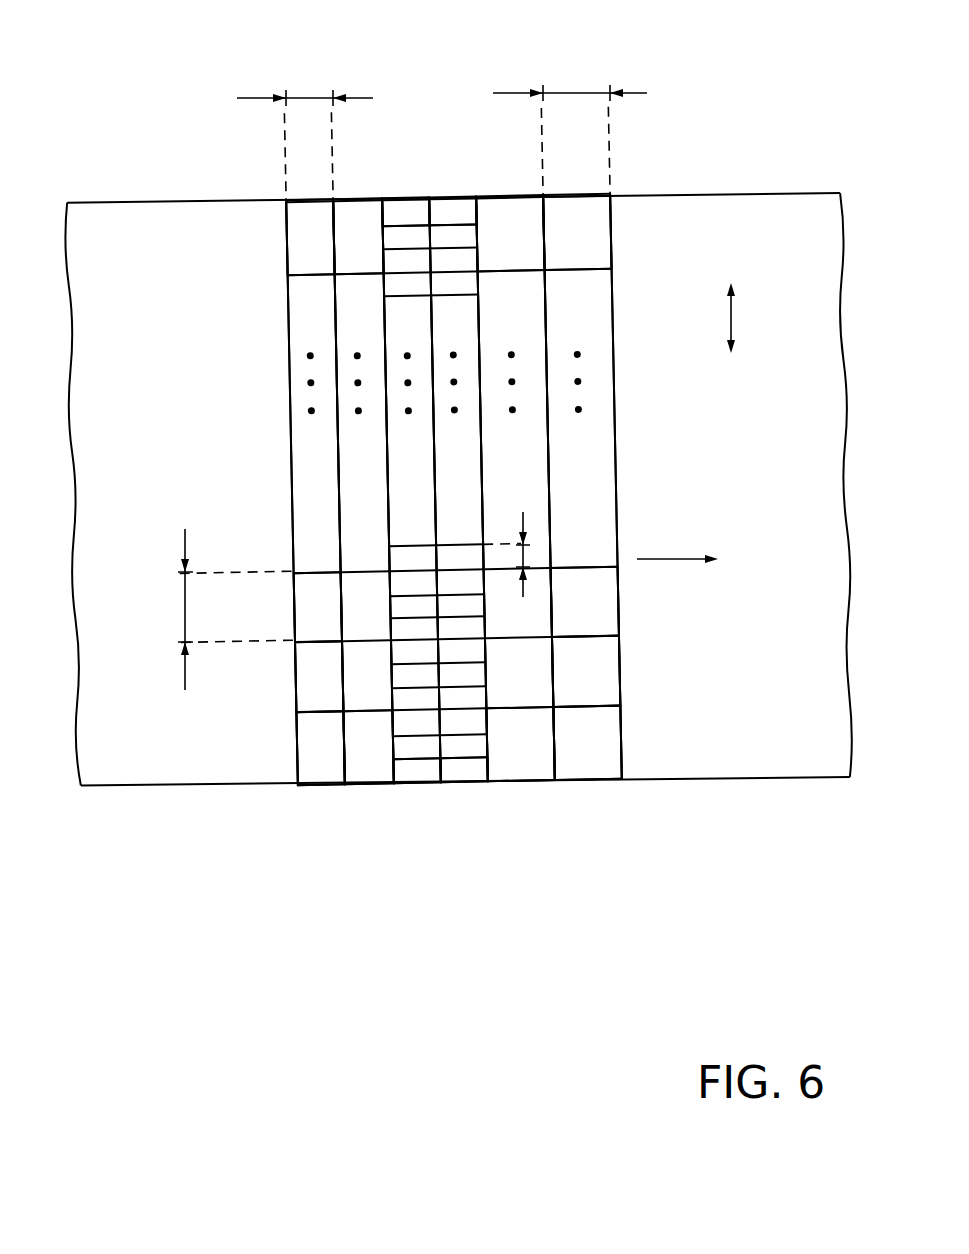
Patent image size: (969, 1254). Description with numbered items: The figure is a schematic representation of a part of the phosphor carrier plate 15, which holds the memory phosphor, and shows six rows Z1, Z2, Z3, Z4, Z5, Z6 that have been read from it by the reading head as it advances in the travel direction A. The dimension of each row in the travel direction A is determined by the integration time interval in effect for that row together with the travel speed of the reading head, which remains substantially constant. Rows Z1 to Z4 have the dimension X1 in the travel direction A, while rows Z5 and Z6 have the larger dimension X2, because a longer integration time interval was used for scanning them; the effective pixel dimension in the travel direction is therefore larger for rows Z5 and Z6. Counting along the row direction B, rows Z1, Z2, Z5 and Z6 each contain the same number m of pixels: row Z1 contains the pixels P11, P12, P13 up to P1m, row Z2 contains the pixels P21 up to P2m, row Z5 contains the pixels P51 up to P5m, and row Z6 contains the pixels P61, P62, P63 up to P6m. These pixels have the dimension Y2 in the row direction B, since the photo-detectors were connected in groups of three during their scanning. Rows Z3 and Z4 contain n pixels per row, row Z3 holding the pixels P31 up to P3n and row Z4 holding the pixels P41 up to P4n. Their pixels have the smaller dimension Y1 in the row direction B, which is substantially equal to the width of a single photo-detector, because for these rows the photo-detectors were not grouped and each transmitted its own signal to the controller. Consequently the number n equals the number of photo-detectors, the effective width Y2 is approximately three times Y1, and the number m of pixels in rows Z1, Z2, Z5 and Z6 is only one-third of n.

The phosphor carrier plate 15 is at (766, 776).
The row Z1 is at (320, 802).
The row Z2 is at (368, 802).
The row Z3 is at (420, 802).
The row Z4 is at (472, 802).
The row Z5 is at (530, 800).
The row Z6 is at (592, 800).
The pixel P1m is at (297, 243).
The pixel P2m is at (360, 215).
The pixel P3n is at (413, 210).
The pixel P4n is at (452, 210).
The pixel P5m is at (504, 215).
The pixel P6m is at (598, 230).
The pixel P13 is at (305, 599).
The pixel P12 is at (305, 689).
The pixel P11 is at (305, 748).
The pixel P63 is at (605, 595).
The pixel P62 is at (607, 670).
The pixel P61 is at (612, 735).
The pixel P21 is at (353, 775).
The pixel P31 is at (405, 775).
The pixel P41 is at (455, 775).
The pixel P51 is at (510, 772).
The dimension X1 is at (304, 95).
The dimension X2 is at (570, 91).
The dimension Y1 is at (526, 556).
The dimension Y2 is at (183, 608).
The travel direction A is at (665, 557).
The row direction B is at (733, 318).